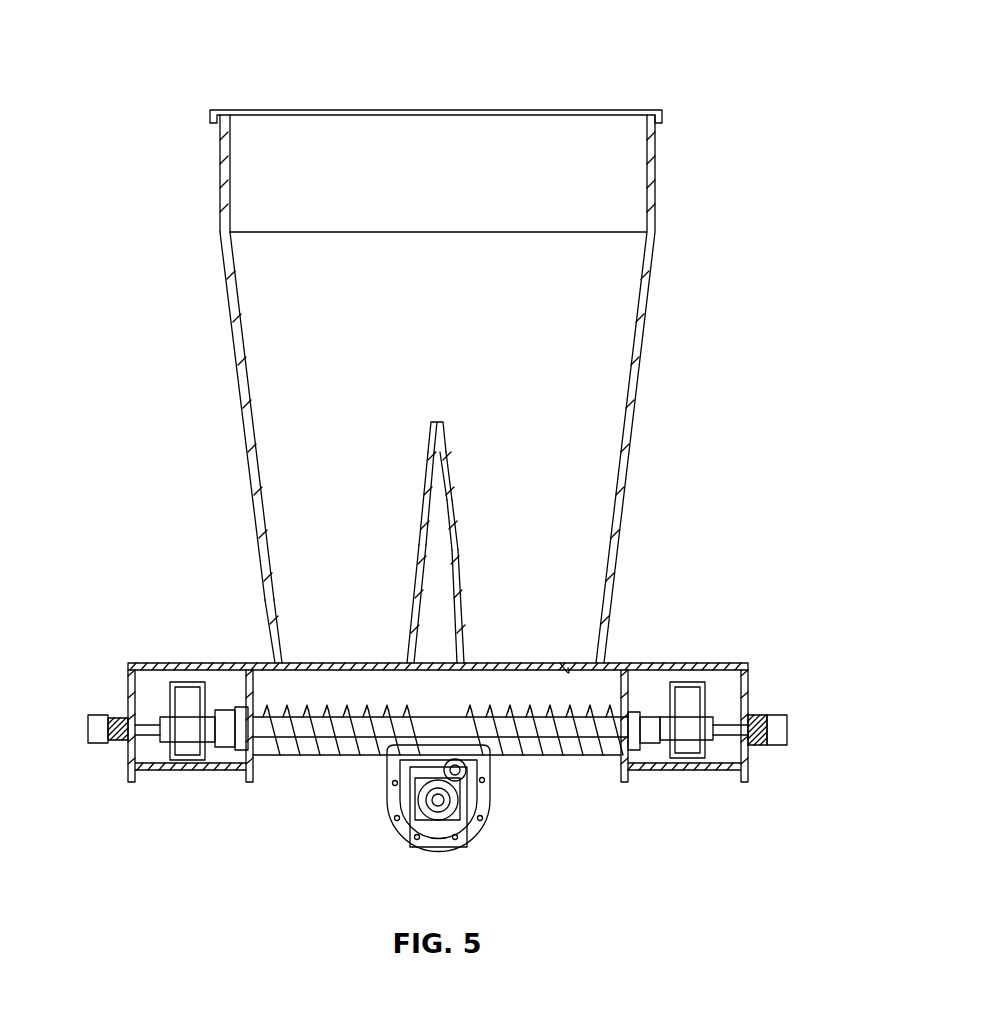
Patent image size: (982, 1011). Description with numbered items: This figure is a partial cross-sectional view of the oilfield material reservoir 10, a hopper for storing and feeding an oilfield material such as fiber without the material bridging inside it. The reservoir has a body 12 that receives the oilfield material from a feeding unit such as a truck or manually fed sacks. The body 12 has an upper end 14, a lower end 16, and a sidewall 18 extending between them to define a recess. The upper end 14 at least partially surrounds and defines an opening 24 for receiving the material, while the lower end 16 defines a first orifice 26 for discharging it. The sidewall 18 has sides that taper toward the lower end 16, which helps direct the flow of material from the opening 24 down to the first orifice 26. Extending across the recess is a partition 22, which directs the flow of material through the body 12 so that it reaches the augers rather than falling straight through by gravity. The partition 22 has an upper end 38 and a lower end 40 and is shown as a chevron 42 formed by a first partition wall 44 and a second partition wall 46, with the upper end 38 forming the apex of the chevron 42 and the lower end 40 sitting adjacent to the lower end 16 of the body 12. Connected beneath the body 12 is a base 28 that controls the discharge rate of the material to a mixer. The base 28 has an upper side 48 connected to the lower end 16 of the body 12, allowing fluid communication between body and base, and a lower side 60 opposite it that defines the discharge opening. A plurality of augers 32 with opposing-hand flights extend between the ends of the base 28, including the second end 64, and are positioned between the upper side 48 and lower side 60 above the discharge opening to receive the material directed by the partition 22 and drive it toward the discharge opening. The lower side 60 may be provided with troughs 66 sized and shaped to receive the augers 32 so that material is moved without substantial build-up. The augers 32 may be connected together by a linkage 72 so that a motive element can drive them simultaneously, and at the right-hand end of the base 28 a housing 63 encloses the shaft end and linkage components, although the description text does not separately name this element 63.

The oilfield material reservoir 10 is at (200, 49).
The body 12 is at (652, 272).
The upper end 14 is at (628, 112).
The lower end 16 is at (565, 668).
The sidewall 18 is at (247, 386).
The partition 22 is at (458, 574).
The opening 24 is at (224, 194).
The first orifice 26 is at (272, 622).
The base 28 is at (597, 752).
The augers 32 is at (300, 742).
The upper end of partition 38 is at (440, 423).
The lower end of partition 40 is at (418, 628).
The chevron 42 is at (454, 525).
The first partition wall 44 is at (420, 548).
The second partition wall 46 is at (450, 480).
The upper side 48 is at (500, 663).
The lower side 60 is at (500, 752).
The right end housing 63 is at (725, 773).
The second end 64 is at (432, 805).
The troughs 66 is at (357, 752).
The linkage 72 is at (190, 757).